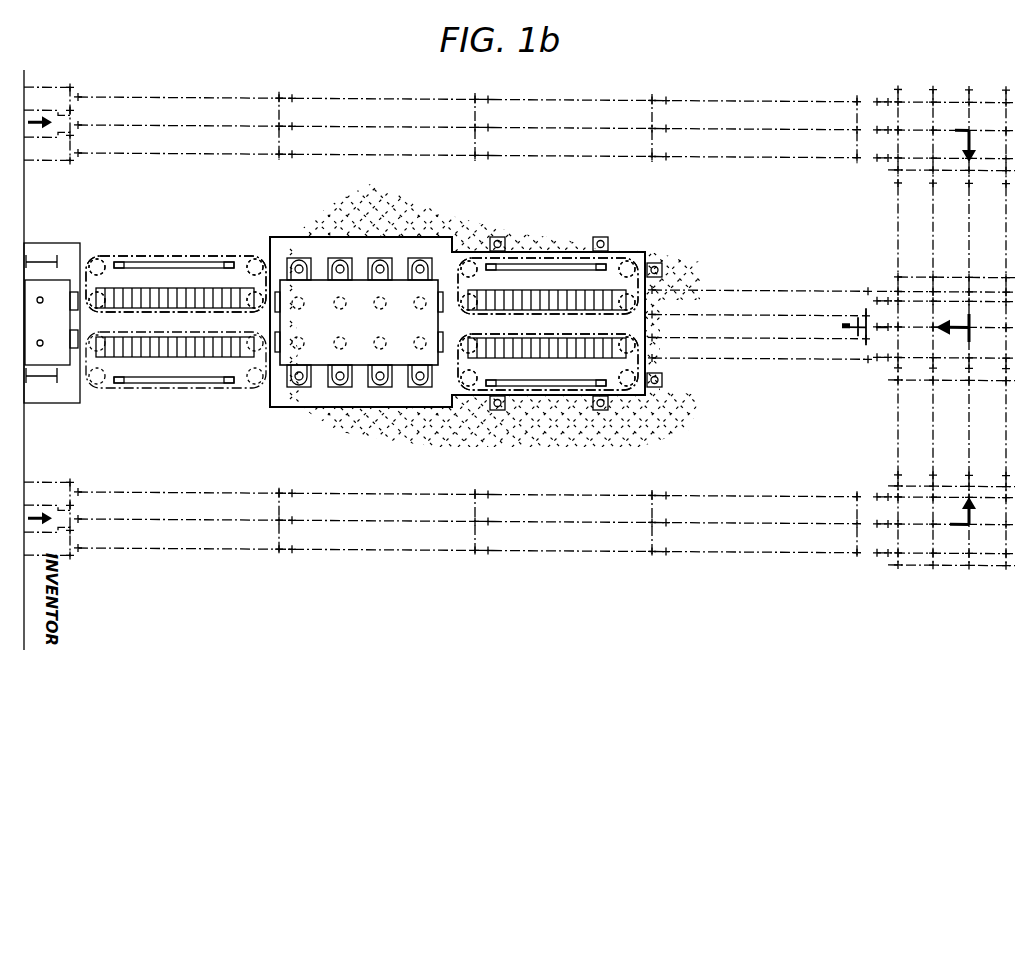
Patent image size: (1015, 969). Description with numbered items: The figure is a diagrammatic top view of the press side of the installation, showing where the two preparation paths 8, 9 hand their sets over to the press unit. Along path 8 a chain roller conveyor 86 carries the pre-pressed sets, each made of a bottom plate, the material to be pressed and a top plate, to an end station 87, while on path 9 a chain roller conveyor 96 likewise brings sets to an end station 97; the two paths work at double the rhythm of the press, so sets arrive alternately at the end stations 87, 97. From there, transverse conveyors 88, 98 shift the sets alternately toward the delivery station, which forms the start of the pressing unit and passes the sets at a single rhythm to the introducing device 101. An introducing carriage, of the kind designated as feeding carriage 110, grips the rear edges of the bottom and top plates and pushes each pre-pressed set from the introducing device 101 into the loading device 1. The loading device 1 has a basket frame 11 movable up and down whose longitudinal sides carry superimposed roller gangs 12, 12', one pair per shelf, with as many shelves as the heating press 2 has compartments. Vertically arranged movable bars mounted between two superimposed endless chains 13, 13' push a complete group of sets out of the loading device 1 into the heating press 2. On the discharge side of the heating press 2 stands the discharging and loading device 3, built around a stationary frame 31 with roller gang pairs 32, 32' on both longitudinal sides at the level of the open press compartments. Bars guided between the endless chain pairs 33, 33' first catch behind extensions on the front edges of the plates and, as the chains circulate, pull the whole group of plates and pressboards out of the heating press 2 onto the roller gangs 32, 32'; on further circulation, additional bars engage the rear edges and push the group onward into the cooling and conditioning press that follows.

The loading device 1 is at (545, 208).
The heating press 2 is at (365, 204).
The discharging and loading device 3 is at (161, 228).
The path 8 is at (163, 581).
The path 9 is at (163, 61).
The basket frame 11 is at (562, 266).
The roller gang 12 is at (547, 395).
The roller gang 12' is at (548, 252).
The endless chain 13 is at (546, 416).
The endless chain 13' is at (548, 252).
The stationary frame 31 is at (181, 262).
The roller gang 32 is at (175, 380).
The roller gang 32' is at (175, 254).
The endless chain 33 is at (174, 400).
The endless chain 33' is at (176, 256).
The chain roller conveyor 86 is at (232, 545).
The end station 87 is at (984, 534).
The transverse conveyor 88 is at (908, 432).
The chain roller conveyor 96 is at (220, 100).
The end station 97 is at (982, 104).
The transverse conveyor 98 is at (908, 212).
The introducing device 101 is at (758, 296).
The feeding carriage 110 is at (858, 335).